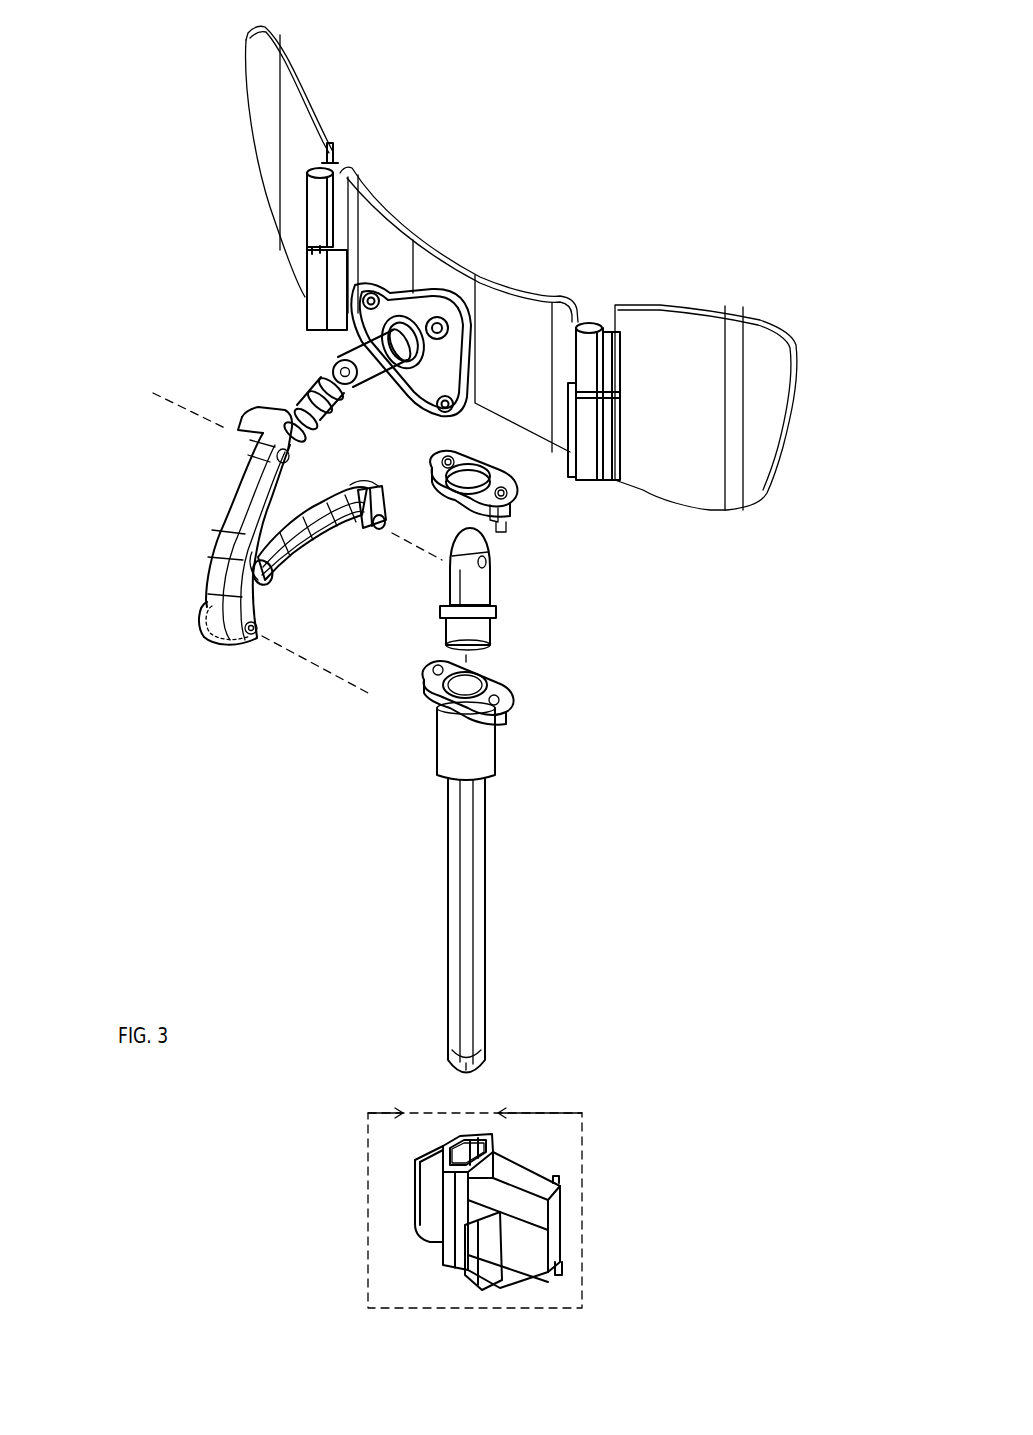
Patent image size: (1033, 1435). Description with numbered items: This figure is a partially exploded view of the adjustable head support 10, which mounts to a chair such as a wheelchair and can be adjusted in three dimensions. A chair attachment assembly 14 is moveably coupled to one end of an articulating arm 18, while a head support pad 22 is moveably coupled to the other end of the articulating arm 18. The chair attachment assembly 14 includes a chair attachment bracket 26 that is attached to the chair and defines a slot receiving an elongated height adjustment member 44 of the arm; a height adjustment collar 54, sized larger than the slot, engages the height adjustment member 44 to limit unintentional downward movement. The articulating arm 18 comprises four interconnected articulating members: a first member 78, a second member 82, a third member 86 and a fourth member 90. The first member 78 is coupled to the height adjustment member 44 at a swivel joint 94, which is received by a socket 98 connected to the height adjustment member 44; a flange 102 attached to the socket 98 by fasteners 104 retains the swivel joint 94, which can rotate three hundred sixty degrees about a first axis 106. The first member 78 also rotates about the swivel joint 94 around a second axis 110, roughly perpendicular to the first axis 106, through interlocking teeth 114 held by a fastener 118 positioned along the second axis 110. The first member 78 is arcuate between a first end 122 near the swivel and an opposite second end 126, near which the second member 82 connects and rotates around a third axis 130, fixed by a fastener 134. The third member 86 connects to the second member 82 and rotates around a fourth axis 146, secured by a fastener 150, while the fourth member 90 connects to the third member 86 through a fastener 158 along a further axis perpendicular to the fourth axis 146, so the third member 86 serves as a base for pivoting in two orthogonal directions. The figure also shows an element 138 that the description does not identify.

The adjustable head support 10 is at (753, 134).
The chair attachment assembly 14 is at (624, 1247).
The articulating arm 18 is at (146, 575).
The head support pad 22 is at (483, 200).
The chair attachment bracket 26 is at (550, 1228).
The elongated height adjustment member 44 is at (486, 890).
The height adjustment collar 54 is at (447, 1180).
The first member 78 is at (292, 545).
The second member 82 is at (230, 490).
The third member 86 is at (333, 410).
The fourth member 90 is at (370, 378).
The swivel joint 94 is at (484, 583).
The socket 98 is at (499, 682).
The flange 102 is at (522, 508).
The fastener 104 is at (451, 462).
The first axis 106 is at (470, 663).
The second axis 110 is at (410, 537).
The teeth 114 is at (346, 530).
The fastener 118 is at (378, 519).
The first end 122 is at (368, 497).
The second end 126 is at (200, 623).
The third axis 130 is at (312, 667).
The fastener 134 is at (249, 640).
The joint 138 is at (272, 570).
The fourth axis 146 is at (197, 411).
The fastener 150 is at (290, 458).
The fastener 158 is at (337, 370).